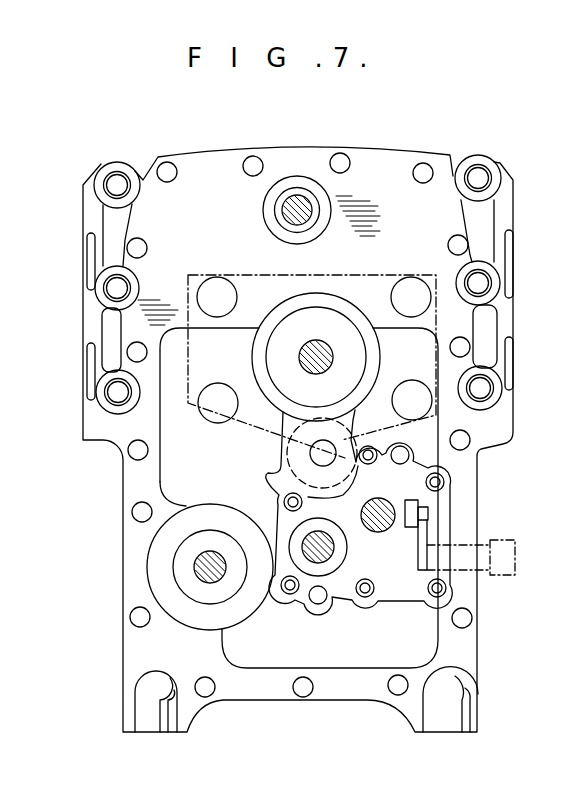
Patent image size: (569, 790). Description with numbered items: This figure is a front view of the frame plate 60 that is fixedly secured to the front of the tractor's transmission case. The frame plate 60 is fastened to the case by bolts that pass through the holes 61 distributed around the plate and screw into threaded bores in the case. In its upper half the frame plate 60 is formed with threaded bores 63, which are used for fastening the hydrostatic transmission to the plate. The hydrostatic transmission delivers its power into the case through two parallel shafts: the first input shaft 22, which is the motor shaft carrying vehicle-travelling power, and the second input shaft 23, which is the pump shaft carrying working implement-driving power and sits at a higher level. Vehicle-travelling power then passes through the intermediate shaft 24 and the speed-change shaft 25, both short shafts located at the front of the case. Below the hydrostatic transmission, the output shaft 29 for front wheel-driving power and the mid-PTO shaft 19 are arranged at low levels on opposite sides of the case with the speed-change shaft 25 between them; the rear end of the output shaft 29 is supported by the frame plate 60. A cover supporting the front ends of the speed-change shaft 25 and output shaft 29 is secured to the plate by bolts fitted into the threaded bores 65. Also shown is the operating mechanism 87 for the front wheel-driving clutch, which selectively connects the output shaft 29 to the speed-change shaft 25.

The mid-PTO shaft 19 is at (212, 570).
The first input shaft 22 is at (318, 355).
The second input shaft 23 is at (300, 200).
The intermediate shaft 24 is at (324, 440).
The speed-change shaft 25 is at (322, 553).
The output shaft 29 is at (445, 470).
The frame plate 60 is at (392, 165).
The holes 61 is at (250, 160).
The threaded bores 63 is at (478, 178).
The threaded bores 65 is at (292, 500).
The operating mechanism 87 is at (430, 527).